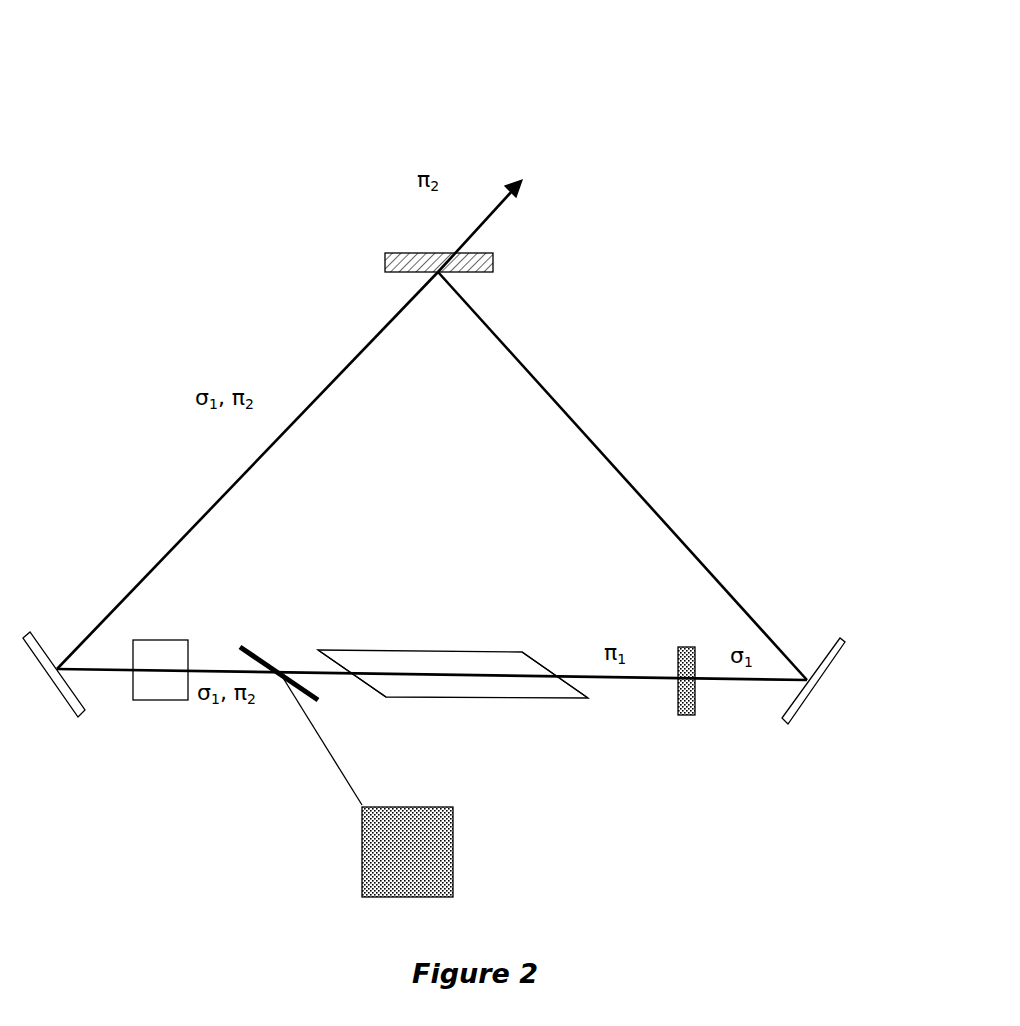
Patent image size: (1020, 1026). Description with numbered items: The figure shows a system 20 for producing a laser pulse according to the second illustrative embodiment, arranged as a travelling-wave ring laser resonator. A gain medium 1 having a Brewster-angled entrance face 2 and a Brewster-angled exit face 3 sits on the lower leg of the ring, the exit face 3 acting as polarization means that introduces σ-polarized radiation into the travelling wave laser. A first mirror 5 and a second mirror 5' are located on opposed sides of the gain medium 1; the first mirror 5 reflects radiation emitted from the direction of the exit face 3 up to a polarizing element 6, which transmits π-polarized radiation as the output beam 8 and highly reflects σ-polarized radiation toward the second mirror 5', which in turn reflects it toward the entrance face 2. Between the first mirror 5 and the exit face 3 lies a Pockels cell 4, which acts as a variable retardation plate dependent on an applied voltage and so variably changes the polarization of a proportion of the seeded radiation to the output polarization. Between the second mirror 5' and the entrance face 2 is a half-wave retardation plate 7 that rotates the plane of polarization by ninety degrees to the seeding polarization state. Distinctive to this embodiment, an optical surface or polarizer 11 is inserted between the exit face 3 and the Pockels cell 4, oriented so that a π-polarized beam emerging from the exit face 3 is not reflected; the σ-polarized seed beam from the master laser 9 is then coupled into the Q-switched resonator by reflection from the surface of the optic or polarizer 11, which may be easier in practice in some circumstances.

The system 20 is at (236, 140).
The first mirror 5 is at (54, 628).
The Pockels cell 4 is at (133, 688).
The optic or polarizer 11 is at (257, 653).
The gain medium 1 is at (425, 650).
The entrance face 2 is at (540, 662).
The exit face 3 is at (372, 690).
The half-wave retardation plate 7 is at (688, 647).
The second mirror 5' is at (808, 615).
The polarizing element 6 is at (410, 252).
The output beam 8 is at (497, 213).
The master laser 9 is at (453, 847).